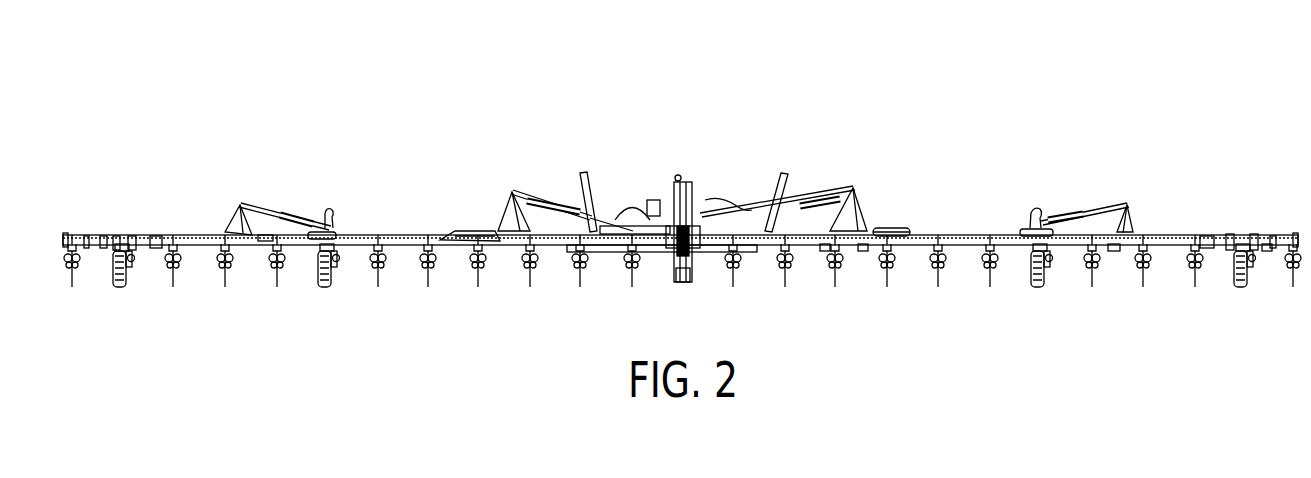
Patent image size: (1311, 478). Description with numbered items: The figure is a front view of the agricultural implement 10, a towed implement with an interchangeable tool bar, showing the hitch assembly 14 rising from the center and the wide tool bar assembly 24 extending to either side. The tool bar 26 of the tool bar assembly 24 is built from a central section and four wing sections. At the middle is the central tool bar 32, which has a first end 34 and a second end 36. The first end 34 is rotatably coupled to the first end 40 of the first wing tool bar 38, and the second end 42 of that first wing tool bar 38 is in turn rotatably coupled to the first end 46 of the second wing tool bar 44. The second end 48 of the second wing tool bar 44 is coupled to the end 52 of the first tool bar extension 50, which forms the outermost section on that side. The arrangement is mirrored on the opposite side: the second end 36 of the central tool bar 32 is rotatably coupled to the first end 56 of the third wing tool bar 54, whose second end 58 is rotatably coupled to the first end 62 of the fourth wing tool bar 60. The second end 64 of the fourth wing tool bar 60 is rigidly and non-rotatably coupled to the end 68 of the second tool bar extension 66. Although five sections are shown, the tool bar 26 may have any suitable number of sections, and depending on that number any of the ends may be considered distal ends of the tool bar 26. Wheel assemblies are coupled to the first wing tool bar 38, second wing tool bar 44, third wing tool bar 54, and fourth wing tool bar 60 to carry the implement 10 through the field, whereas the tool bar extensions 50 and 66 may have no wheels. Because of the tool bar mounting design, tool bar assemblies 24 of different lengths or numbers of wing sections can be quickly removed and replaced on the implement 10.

The agricultural implement 10 is at (91, 95).
The hitch assembly 14 is at (688, 190).
The tool bar assembly 24 is at (898, 168).
The tool bar 26 is at (652, 253).
The central tool bar 32 is at (603, 253).
The first end 34 is at (485, 237).
The second end 36 is at (827, 251).
The first wing tool bar 38 is at (360, 236).
The first end 40 is at (470, 236).
The second end 42 is at (257, 233).
The second wing tool bar 44 is at (157, 235).
The first end 46 is at (231, 230).
The second end 48 is at (118, 233).
The first tool bar extension 50 is at (93, 233).
The end 52 is at (105, 233).
The third wing tool bar 54 is at (963, 232).
The first end 56 is at (863, 251).
The second end 58 is at (1115, 251).
The fourth wing tool bar 60 is at (1213, 233).
The first end 62 is at (1129, 230).
The second end 64 is at (1247, 233).
The second tool bar extension 66 is at (1268, 251).
The end 68 is at (1258, 233).